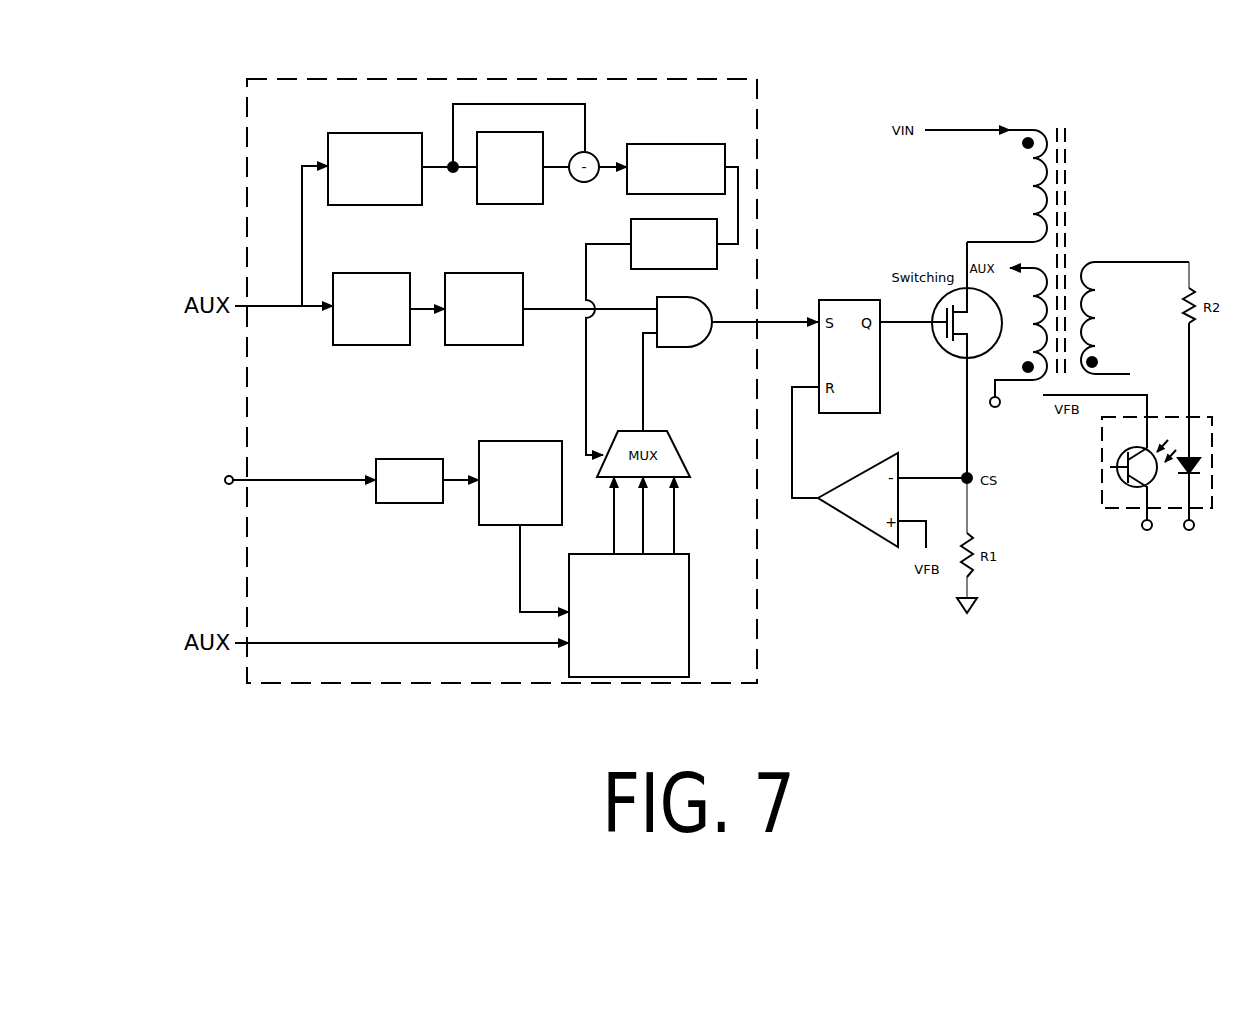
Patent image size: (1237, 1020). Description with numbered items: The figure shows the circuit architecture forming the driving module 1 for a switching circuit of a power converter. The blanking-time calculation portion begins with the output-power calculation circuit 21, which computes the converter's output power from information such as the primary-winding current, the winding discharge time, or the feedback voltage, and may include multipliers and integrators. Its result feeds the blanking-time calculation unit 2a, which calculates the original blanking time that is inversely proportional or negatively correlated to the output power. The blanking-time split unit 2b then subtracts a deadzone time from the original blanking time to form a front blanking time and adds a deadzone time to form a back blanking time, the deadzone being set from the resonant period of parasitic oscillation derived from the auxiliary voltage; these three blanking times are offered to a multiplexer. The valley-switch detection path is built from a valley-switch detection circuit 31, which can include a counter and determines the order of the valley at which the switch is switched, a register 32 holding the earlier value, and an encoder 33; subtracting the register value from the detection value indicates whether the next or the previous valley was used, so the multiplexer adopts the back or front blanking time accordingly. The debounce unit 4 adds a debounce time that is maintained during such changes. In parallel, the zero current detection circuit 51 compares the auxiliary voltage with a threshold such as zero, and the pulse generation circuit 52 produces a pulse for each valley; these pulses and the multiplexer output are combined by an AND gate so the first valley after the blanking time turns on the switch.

The driving module 1 is at (503, 79).
The valley-switch detection circuit 31 is at (372, 133).
The register 32 is at (510, 204).
The encoder 33 is at (678, 144).
The debounce unit 4 is at (671, 269).
The zero current detection (ZCD) circuit 51 is at (372, 273).
The pulse generation circuit 52 is at (484, 273).
The output-power calculation circuit 21 is at (408, 459).
The blanking-time calculation unit 2a is at (520, 441).
The blanking-time split unit 2b is at (689, 612).